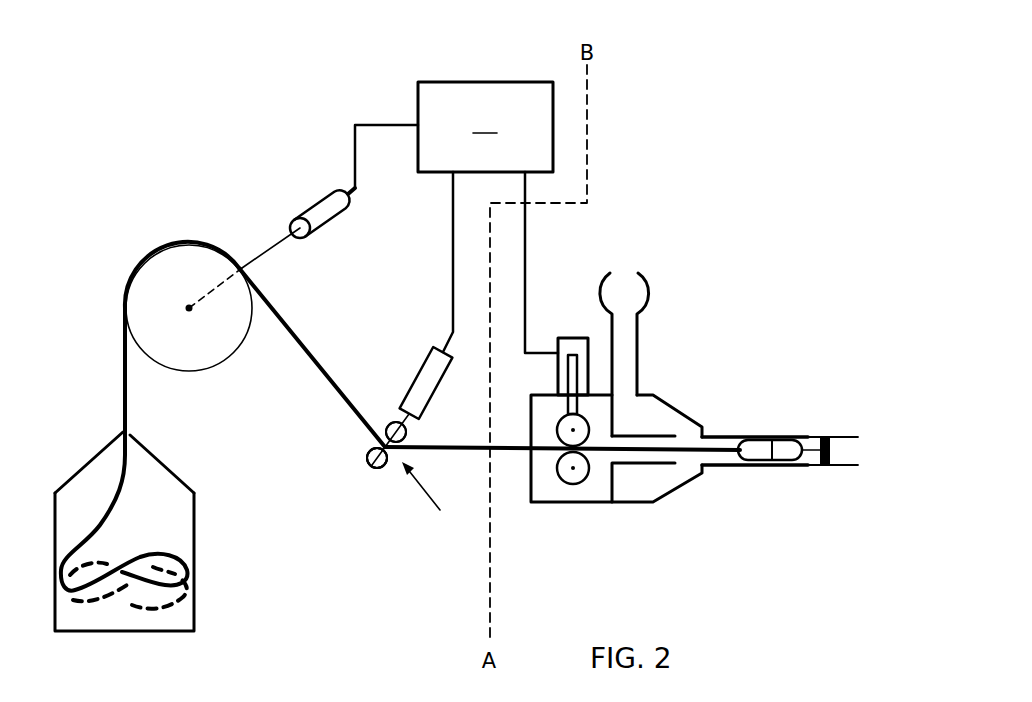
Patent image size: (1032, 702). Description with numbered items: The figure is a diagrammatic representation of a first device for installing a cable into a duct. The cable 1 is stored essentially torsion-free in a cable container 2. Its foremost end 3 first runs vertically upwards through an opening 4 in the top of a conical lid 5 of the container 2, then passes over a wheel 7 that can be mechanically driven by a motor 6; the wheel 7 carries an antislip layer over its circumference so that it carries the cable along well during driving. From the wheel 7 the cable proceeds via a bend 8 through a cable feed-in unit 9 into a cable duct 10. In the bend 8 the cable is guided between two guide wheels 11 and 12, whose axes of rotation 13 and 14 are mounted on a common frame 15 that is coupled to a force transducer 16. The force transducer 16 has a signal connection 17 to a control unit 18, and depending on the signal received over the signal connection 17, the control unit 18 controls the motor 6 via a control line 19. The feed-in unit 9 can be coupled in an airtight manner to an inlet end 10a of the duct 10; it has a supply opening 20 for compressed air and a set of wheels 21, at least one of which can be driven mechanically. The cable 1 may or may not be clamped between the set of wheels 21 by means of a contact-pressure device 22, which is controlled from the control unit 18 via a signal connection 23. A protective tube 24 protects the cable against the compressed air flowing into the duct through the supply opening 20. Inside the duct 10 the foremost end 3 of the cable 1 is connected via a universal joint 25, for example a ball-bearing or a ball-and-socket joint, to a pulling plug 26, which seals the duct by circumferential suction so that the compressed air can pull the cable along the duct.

The cable 1 is at (280, 312).
The cable container 2 is at (195, 597).
The foremost end 3 is at (722, 453).
The opening 4 is at (123, 432).
The conical lid 5 is at (168, 465).
The motor 6 is at (308, 205).
The wheel 7 is at (232, 362).
The bend 8 is at (427, 501).
The cable feed-in unit 9 is at (560, 507).
The cable duct 10 is at (805, 433).
The inlet end 10a is at (707, 433).
The guide wheel 11 is at (388, 420).
The guide wheel 12 is at (372, 452).
The axis of rotation 13 is at (403, 432).
The axis of rotation 14 is at (382, 477).
The common frame 15 is at (373, 472).
The force transducer 16 is at (418, 363).
The signal connection 17 is at (450, 255).
The control unit 18 is at (485, 127).
The control line 19 is at (373, 123).
The supply opening 20 is at (645, 282).
The set of wheels 21 is at (555, 428).
The contact-pressure device 22 is at (570, 337).
The signal connection 23 is at (525, 243).
The protective tube 24 is at (652, 433).
The universal joint 25 is at (785, 457).
The pulling plug 26 is at (825, 467).